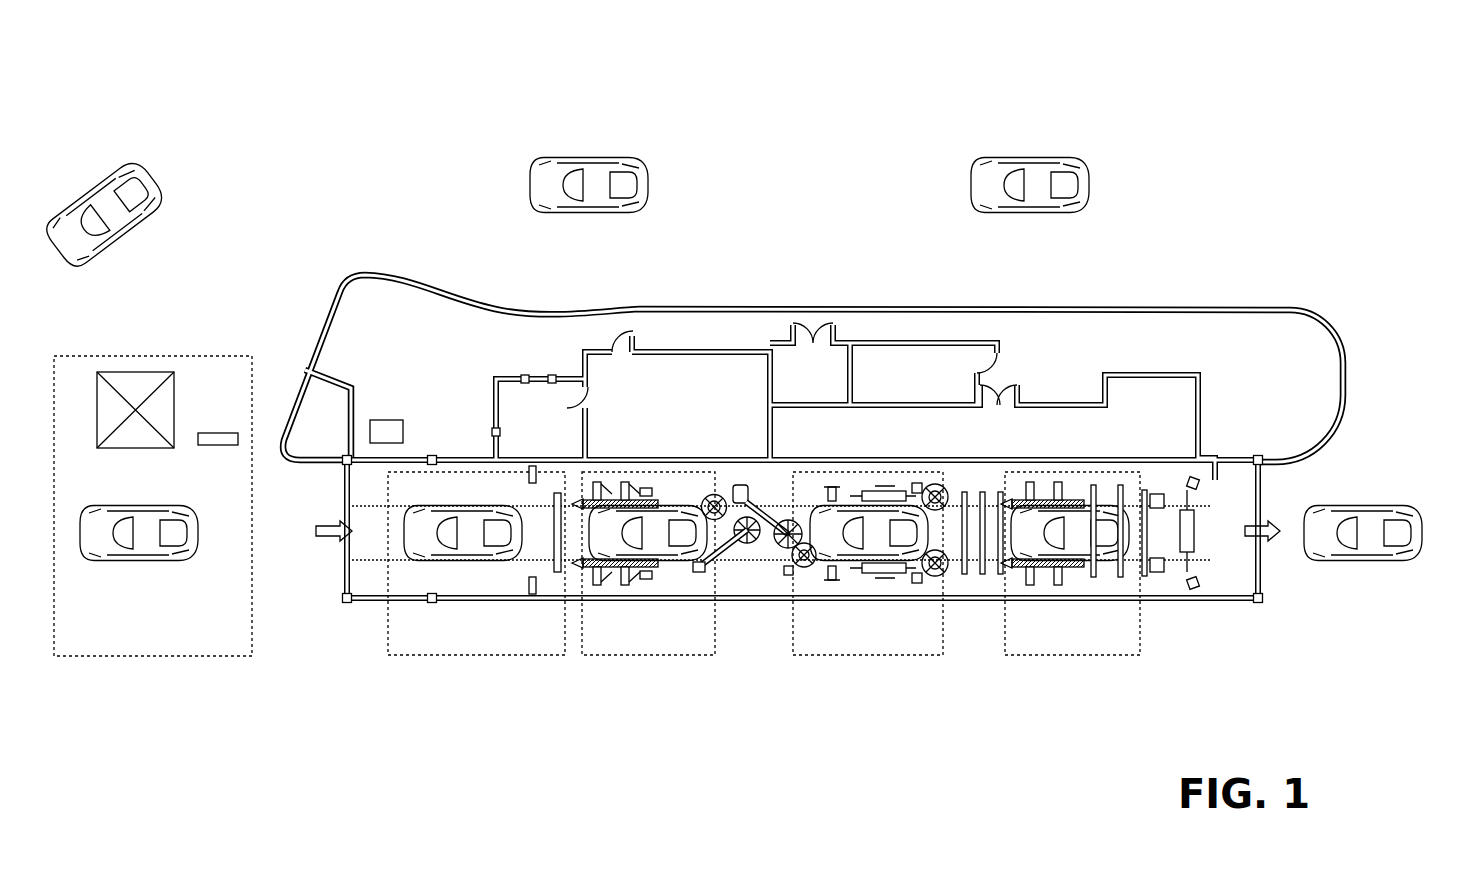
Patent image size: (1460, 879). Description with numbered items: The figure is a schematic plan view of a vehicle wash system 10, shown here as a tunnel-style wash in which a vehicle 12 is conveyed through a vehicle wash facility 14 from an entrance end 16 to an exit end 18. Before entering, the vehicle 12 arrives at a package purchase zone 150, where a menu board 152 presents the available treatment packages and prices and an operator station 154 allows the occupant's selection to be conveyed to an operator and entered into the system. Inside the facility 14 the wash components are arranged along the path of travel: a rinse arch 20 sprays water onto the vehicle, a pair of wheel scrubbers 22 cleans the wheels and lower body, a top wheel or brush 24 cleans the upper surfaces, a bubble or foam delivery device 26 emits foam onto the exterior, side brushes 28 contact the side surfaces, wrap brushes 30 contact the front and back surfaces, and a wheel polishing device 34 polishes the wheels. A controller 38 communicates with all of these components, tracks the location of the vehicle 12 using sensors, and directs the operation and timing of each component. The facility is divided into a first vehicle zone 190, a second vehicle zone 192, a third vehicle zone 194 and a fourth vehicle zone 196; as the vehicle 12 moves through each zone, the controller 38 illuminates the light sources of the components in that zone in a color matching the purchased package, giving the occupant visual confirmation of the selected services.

The vehicle wash system 10 is at (1124, 130).
The vehicle 12 is at (628, 157).
The vehicle wash facility 14 is at (1133, 304).
The entrance end 16 is at (330, 584).
The exit end 18 is at (1264, 512).
The rinse arch 20 is at (550, 476).
The wheel scrubbers 22 is at (598, 480).
The top wheel or brush 24 is at (645, 482).
The bubble or foam delivery device 26 is at (694, 490).
The side brushes 28 is at (718, 490).
The wrap brushes 30 is at (793, 518).
The wheel polishing device 34 is at (1045, 572).
The controller 38 is at (380, 423).
The package purchase zone 150 is at (127, 658).
The menu board 152 is at (214, 436).
The operator station 154 is at (150, 378).
The first vehicle zone 190 is at (408, 658).
The second vehicle zone 192 is at (663, 658).
The third vehicle zone 194 is at (888, 658).
The fourth vehicle zone 196 is at (1075, 658).